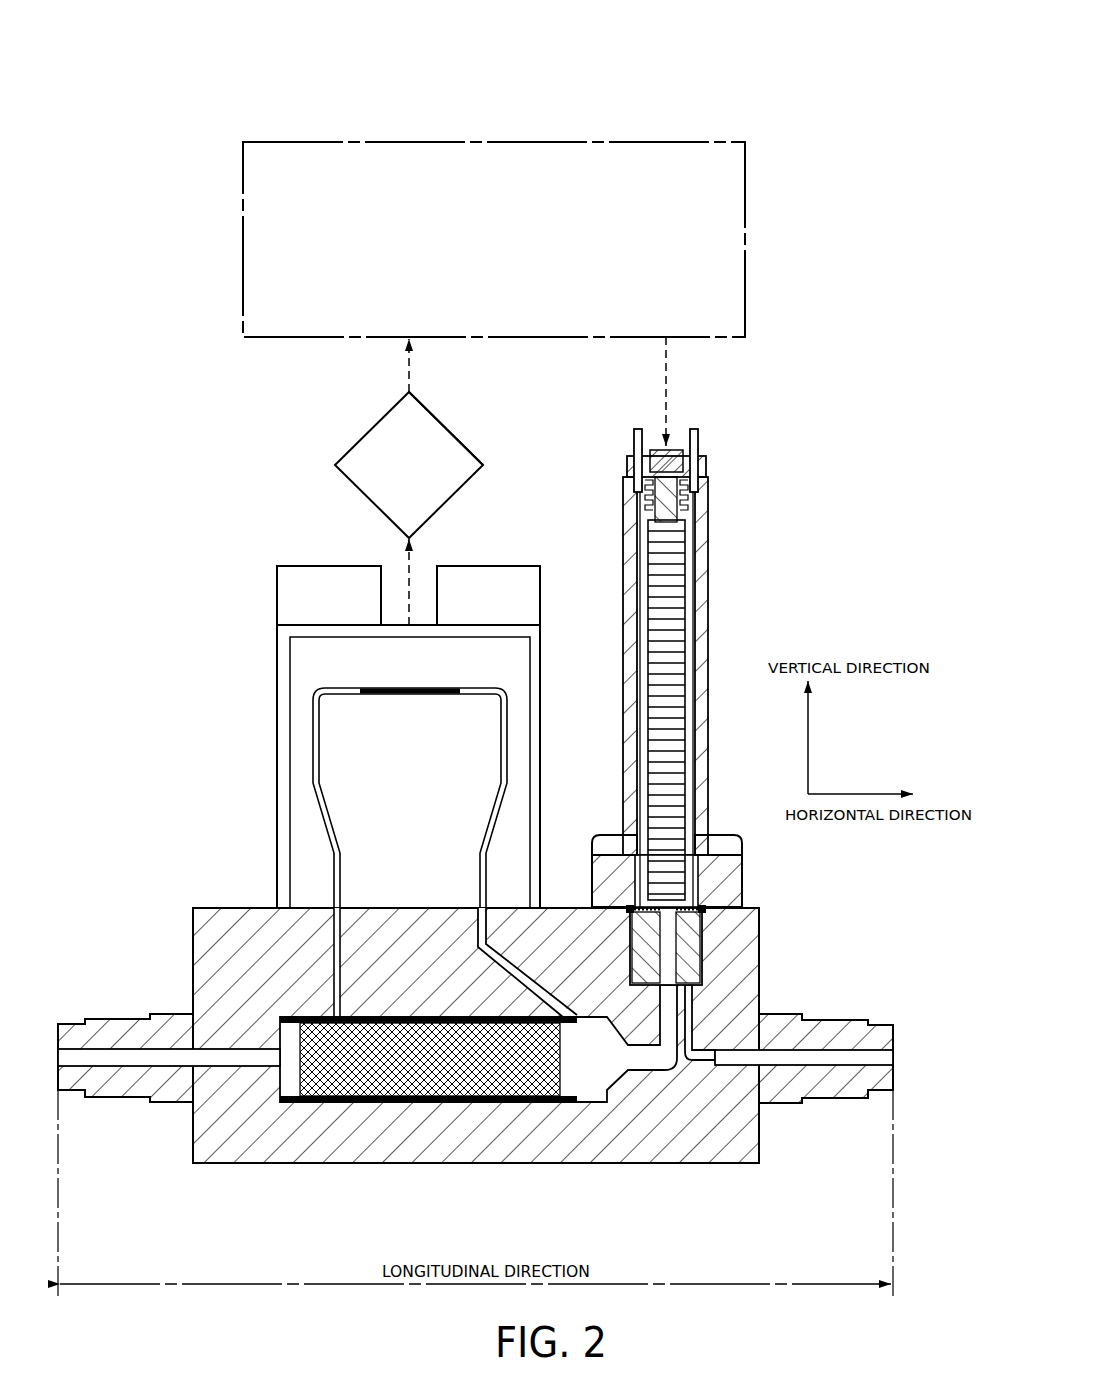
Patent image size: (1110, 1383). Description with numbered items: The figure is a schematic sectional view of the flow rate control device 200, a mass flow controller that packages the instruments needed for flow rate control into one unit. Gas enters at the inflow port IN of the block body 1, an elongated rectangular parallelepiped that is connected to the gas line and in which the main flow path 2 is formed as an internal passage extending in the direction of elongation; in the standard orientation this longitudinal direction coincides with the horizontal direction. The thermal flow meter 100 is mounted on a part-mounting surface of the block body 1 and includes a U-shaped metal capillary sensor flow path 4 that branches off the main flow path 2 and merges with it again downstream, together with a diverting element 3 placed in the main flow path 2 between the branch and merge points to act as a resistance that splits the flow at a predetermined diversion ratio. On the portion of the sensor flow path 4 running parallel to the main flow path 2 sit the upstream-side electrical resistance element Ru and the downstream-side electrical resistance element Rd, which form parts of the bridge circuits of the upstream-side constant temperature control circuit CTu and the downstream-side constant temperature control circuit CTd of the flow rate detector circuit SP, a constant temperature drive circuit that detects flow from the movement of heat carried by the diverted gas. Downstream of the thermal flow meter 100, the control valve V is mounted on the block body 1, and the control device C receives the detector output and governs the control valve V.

The thermal flow meter 100 is at (154, 417).
The flow rate control device 200 is at (714, 104).
The control device C is at (495, 141).
The flow rate detector circuit SP is at (269, 441).
The upstream-side constant temperature control circuit CTu is at (369, 430).
The downstream-side constant temperature control circuit CTd is at (399, 422).
The control valve V is at (714, 439).
The sensor flow path 4 is at (313, 750).
The upstream-side electrical resistance element Ru is at (385, 688).
The downstream-side electrical resistance element Rd is at (433, 688).
The block body 1 is at (245, 1164).
The main flow path 2 is at (163, 1058).
The diverting element 3 is at (442, 1113).
The inflow port IN is at (118, 989).